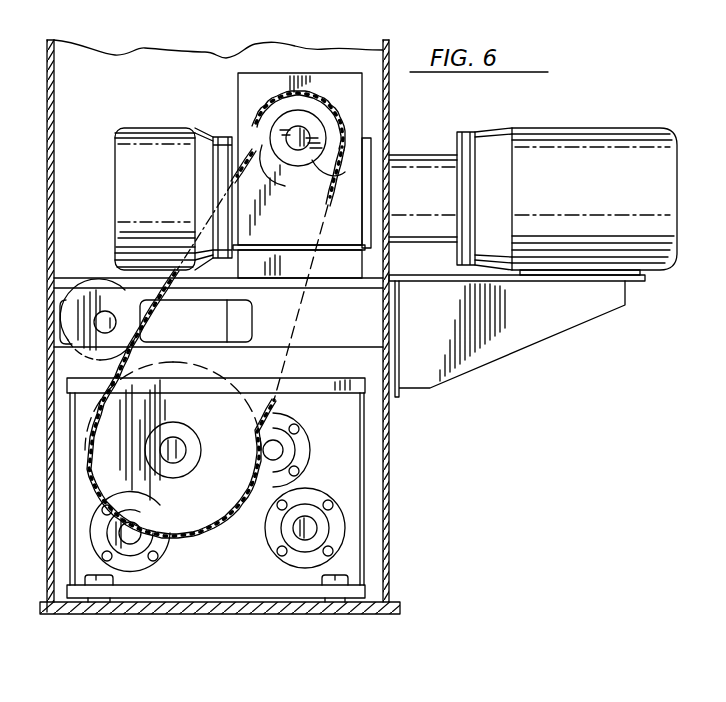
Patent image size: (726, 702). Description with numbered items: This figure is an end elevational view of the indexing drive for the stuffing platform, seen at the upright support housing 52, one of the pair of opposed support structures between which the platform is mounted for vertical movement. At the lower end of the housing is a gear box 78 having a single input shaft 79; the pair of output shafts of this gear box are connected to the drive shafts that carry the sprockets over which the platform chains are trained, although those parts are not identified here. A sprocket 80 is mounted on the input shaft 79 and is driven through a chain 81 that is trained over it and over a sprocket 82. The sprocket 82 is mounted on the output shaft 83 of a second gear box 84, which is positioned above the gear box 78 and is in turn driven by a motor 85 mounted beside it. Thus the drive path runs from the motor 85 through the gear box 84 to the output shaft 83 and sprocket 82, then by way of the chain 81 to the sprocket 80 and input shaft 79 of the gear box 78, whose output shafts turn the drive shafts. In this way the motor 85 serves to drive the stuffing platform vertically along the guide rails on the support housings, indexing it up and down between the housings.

The support housing 52 is at (398, 410).
The gear box 78 is at (345, 466).
The input shaft 79 is at (182, 462).
The sprocket 80 is at (217, 495).
The chain 81 is at (327, 207).
The sprocket 82 is at (315, 130).
The output shaft 83 is at (297, 148).
The gear box 84 is at (237, 88).
The motor 85 is at (565, 142).